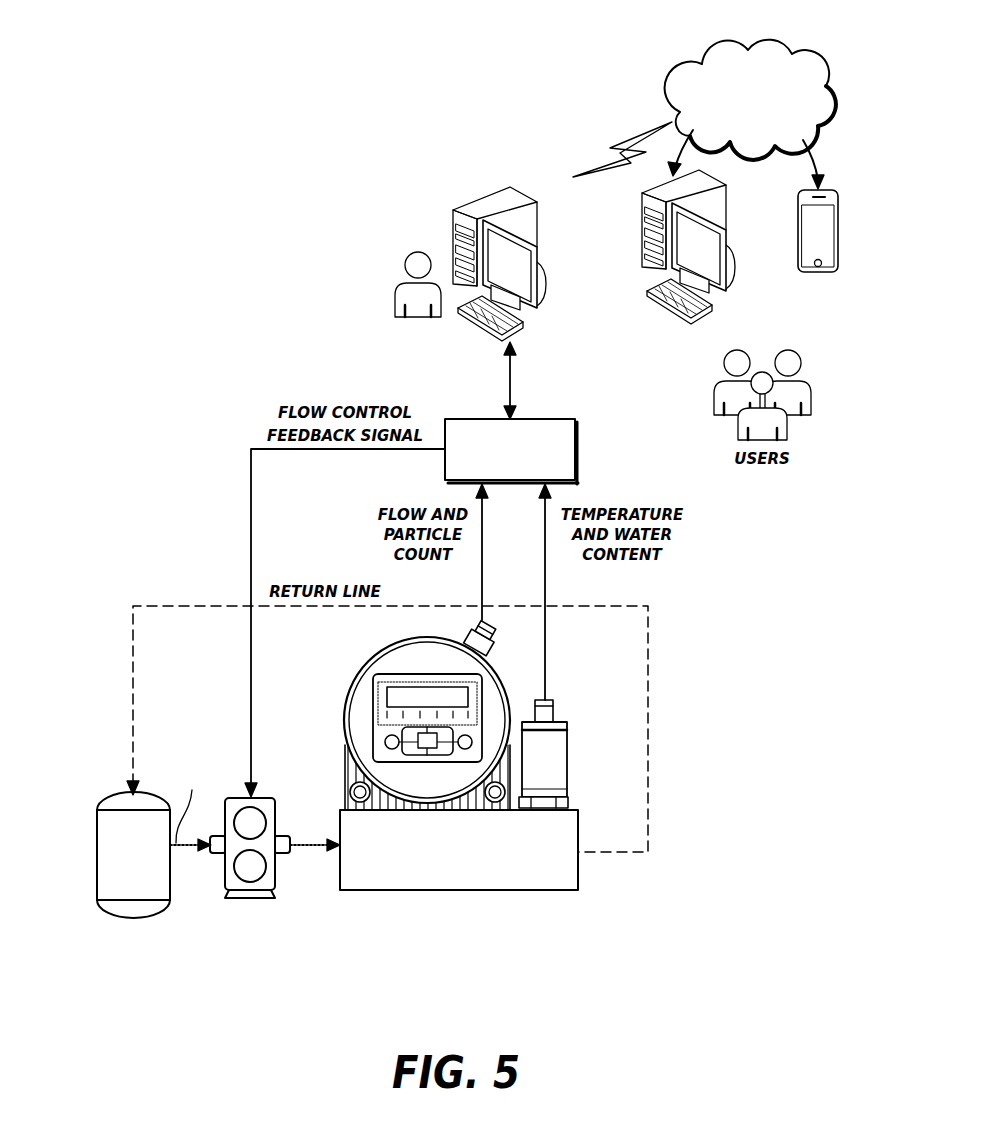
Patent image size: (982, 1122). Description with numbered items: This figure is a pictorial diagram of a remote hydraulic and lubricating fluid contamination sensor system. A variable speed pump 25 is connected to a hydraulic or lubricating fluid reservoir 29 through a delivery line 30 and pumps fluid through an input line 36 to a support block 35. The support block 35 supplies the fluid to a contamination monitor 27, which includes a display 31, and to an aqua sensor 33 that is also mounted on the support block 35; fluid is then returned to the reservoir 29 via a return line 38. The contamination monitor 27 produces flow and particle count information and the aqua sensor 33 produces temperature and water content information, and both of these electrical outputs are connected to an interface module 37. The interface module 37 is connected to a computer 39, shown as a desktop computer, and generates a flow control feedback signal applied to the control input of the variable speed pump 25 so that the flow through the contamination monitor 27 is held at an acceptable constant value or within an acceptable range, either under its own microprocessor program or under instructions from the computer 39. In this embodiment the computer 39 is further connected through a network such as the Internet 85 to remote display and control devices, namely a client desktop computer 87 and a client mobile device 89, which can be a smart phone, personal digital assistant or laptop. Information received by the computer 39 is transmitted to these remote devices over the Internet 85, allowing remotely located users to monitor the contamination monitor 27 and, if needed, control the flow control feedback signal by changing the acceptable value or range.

The Internet 85 is at (790, 47).
The computer 39 is at (437, 198).
The client desktop computer 87 is at (642, 218).
The client mobile device 89 is at (798, 220).
The interface module 37 is at (577, 448).
The return line 38 is at (648, 805).
The hydraulic or lubricating fluid reservoir 29 is at (108, 800).
The delivery line 30 is at (176, 848).
The variable speed pump 25 is at (275, 822).
The input line 36 is at (307, 852).
The contamination monitor 27 is at (345, 708).
The display 31 is at (378, 667).
The aqua sensor 33 is at (568, 762).
The support block 35 is at (578, 873).